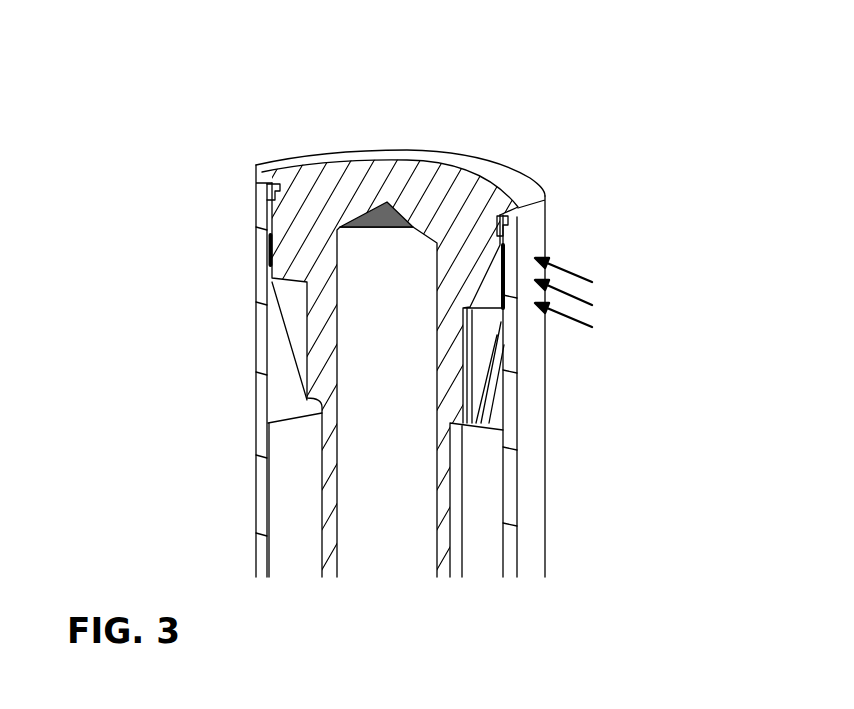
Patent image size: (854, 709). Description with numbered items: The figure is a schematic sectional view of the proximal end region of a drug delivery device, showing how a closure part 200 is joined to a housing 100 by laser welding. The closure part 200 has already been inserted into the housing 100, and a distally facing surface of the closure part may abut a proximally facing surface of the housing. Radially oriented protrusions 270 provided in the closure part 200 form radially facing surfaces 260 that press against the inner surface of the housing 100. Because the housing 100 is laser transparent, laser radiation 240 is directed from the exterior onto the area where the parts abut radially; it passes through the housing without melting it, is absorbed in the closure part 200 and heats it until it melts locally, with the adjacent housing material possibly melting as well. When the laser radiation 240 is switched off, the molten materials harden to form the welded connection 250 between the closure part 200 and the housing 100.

The housing 100 is at (530, 472).
The closure part 200 is at (500, 174).
The laser radiation 240 is at (602, 292).
The welded connection 250 is at (268, 241).
The radially facing surface 260 is at (268, 271).
The radially oriented protrusion 270 is at (292, 243).